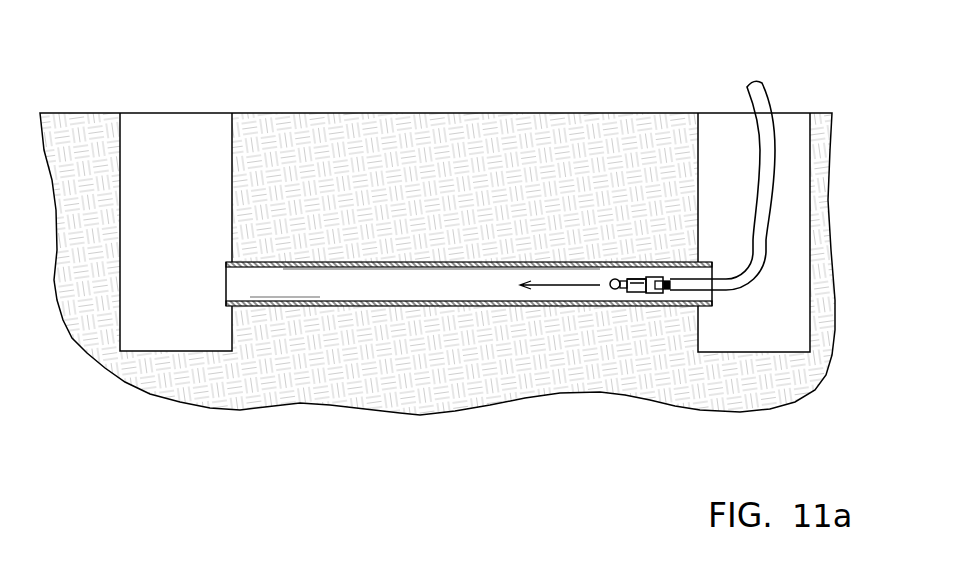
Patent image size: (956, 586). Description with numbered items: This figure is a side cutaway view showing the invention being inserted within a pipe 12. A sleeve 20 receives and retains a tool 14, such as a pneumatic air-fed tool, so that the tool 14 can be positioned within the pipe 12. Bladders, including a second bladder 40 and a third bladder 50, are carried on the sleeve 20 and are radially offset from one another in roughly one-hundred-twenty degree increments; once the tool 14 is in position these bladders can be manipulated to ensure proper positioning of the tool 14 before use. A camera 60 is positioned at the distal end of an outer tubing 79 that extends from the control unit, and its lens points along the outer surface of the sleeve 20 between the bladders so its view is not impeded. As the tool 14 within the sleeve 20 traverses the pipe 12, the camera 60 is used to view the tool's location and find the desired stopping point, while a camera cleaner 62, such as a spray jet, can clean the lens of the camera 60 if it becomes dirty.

The pipe 12 is at (410, 262).
The tool 14 is at (612, 292).
The sleeve 20 is at (655, 277).
The second bladder 40 is at (640, 293).
The third bladder 50 is at (641, 278).
The camera 60 is at (668, 291).
The camera cleaner 62 is at (662, 294).
The outer tubing 79 is at (760, 142).